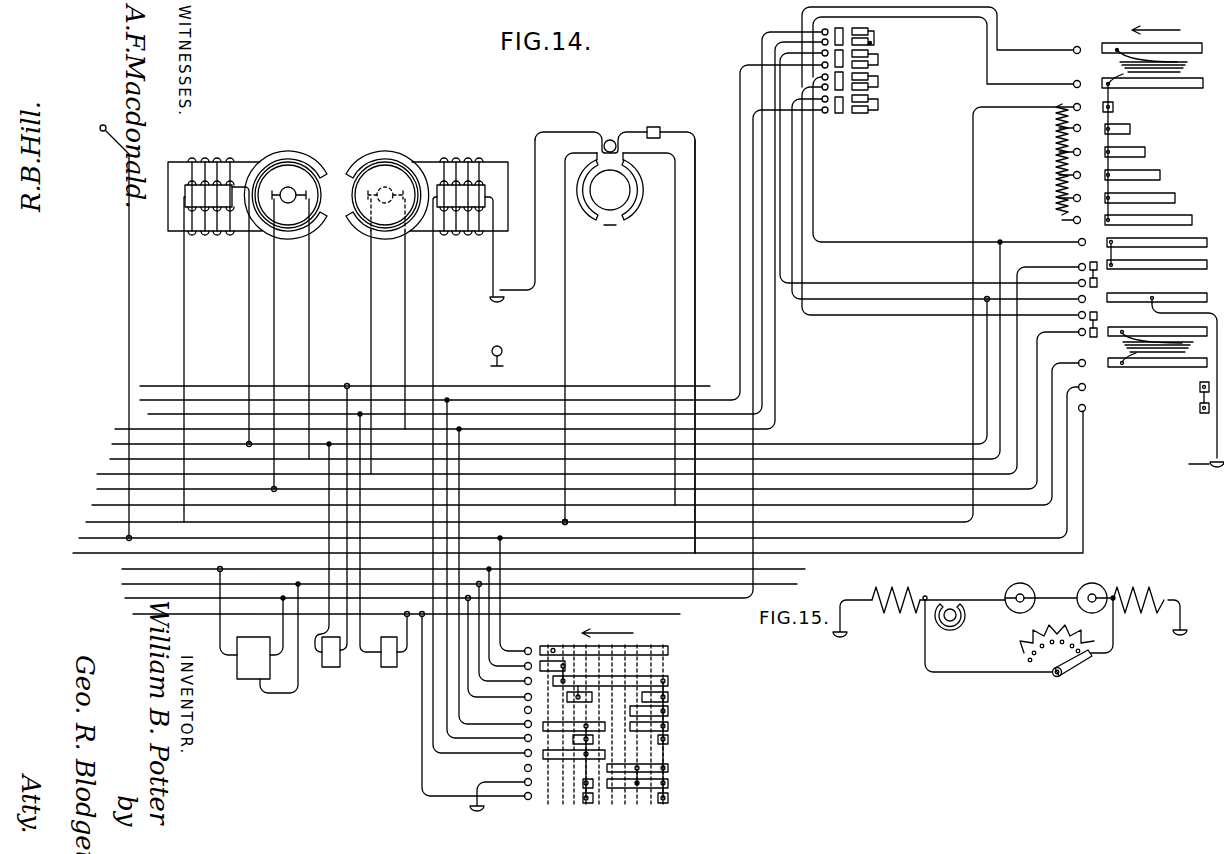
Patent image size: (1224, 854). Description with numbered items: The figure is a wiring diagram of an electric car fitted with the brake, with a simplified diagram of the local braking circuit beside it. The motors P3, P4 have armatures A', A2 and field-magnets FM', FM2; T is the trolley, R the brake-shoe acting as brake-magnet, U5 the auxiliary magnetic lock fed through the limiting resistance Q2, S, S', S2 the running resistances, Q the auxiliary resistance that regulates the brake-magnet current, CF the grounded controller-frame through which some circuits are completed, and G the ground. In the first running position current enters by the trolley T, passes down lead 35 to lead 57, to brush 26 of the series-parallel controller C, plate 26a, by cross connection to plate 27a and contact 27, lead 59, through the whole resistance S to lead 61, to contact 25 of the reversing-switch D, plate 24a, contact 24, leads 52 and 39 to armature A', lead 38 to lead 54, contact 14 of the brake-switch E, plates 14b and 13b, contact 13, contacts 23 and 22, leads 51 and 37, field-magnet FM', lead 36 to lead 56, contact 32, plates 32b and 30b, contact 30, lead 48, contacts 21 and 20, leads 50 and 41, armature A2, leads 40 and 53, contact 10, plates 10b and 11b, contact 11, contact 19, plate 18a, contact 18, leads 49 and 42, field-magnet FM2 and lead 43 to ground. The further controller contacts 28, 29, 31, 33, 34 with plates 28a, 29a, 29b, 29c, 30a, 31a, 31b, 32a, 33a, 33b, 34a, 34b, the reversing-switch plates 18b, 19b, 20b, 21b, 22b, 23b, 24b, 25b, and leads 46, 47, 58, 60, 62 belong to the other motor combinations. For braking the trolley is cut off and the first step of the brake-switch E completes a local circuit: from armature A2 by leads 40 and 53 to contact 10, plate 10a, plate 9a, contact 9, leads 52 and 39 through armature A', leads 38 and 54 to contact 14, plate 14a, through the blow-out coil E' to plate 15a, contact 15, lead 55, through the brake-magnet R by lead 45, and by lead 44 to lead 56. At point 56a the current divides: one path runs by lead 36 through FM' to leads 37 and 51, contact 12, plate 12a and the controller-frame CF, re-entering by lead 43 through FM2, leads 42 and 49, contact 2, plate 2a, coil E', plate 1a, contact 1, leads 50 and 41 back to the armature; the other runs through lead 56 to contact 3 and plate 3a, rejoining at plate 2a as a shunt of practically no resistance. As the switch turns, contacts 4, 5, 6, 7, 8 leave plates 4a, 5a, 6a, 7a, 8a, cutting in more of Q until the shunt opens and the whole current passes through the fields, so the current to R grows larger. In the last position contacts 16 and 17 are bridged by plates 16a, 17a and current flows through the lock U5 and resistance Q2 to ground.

In FIG. 14, the contact 1 is at (946, 47).
In FIG. 14, the contact 2 is at (952, 54).
In FIG. 14, the contact 3 is at (1083, 107).
In FIG. 14, the contact 4 is at (1075, 128).
In FIG. 14, the contact 5 is at (1075, 152).
In FIG. 14, the contact 6 is at (1075, 175).
In FIG. 14, the contact 7 is at (1075, 198).
In FIG. 14, the contact 8 is at (1077, 220).
In FIG. 14, the contact 9 is at (954, 162).
In FIG. 14, the contact 10 is at (1078, 264).
In FIG. 14, the contact 11 is at (1078, 282).
In FIG. 14, the contact 12 is at (1078, 298).
In FIG. 14, the contact 13 is at (1078, 314).
In FIG. 14, the contact 14 is at (1078, 331).
In FIG. 14, the contact 15 is at (1078, 362).
In FIG. 14, the contact 16 is at (1091, 382).
In FIG. 14, the contact 17 is at (1091, 404).
In FIG. 14, the contact 18 is at (817, 26).
In FIG. 14, the contact 19 is at (817, 36).
In FIG. 14, the contact 20 is at (817, 47).
In FIG. 14, the contact 21 is at (817, 59).
In FIG. 14, the contact 22 is at (817, 71).
In FIG. 14, the contact 23 is at (817, 82).
In FIG. 14, the contact 24 is at (817, 94).
In FIG. 14, the contact 25 is at (818, 115).
In FIG. 14, the contact-brush 26 is at (515, 595).
In FIG. 14, the contact 27 is at (509, 618).
In FIG. 14, the controller terminal 28 is at (504, 633).
In FIG. 14, the controller terminal 29 is at (499, 655).
In FIG. 14, the contact 30 is at (494, 577).
In FIG. 14, the controller terminal 31 is at (488, 570).
In FIG. 14, the contact 32 is at (520, 755).
In FIG. 14, the controller terminal 33 is at (501, 793).
In FIG. 14, the controller terminal 34 is at (476, 706).
In FIG. 14, the lead 35 is at (119, 336).
In FIG. 14, the lead 36 is at (192, 359).
In FIG. 14, the lead 37 is at (239, 317).
In FIG. 14, the lead 38 is at (281, 345).
In FIG. 14, the lead 39 is at (319, 329).
In FIG. 14, the lead 40 is at (378, 336).
In FIG. 14, the lead 41 is at (412, 314).
In FIG. 14, the lead 42 is at (479, 475).
In FIG. 14, the lead 43 is at (497, 263).
In FIG. 14, the lead 44 is at (580, 339).
In FIG. 14, the lead 45 is at (649, 329).
In FIG. 14, the conductor 46 is at (704, 346).
In FIG. 14, the conductor 47 is at (425, 379).
In FIG. 14, the lead 48 is at (481, 232).
In FIG. 14, the lead 49 is at (485, 223).
In FIG. 14, the lead 50 is at (468, 235).
In FIG. 14, the lead 51 is at (549, 371).
In FIG. 14, the lead 52 is at (556, 349).
In FIG. 14, the lead 53 is at (588, 370).
In FIG. 14, the lead 54 is at (588, 410).
In FIG. 14, the lead 55 is at (585, 434).
In FIG. 14, the lead 56 is at (580, 314).
In FIG. 14, the point 56a is at (552, 517).
In FIG. 15, the point 56a is at (962, 591).
In FIG. 14, the lead 57 is at (579, 462).
In FIG. 14, the conductor 58 is at (578, 482).
In FIG. 14, the lead 59 is at (463, 562).
In FIG. 14, the conductor 60 is at (459, 577).
In FIG. 14, the lead 61 is at (473, 354).
In FIG. 14, the conductor 62 is at (406, 607).
In FIG. 14, the contact-plate 1a is at (1178, 46).
In FIG. 14, the contact-plate 2a is at (1192, 88).
In FIG. 14, the contact-plate 3a is at (1118, 106).
In FIG. 15, the contact-plate 3a is at (1093, 666).
In FIG. 14, the contact-plate 4a is at (1127, 127).
In FIG. 14, the contact-plate 5a is at (1135, 149).
In FIG. 14, the contact-plate 6a is at (1142, 172).
In FIG. 14, the contact-plate 7a is at (1149, 195).
In FIG. 14, the contact-plate 8a is at (1157, 217).
In FIG. 15, the contact-plate 8a is at (1037, 661).
In FIG. 14, the contact-plate 9a is at (1164, 242).
In FIG. 14, the contact-plate 10a is at (1165, 257).
In FIG. 14, the contact-plate 10b is at (1092, 262).
In FIG. 14, the contact-plate 11b is at (1099, 286).
In FIG. 14, the contact-plate 12a is at (1165, 380).
In FIG. 14, the contact-plate 13b is at (1099, 316).
In FIG. 14, the contact-plate 14a is at (1166, 334).
In FIG. 14, the contact-plate 14b is at (1099, 333).
In FIG. 14, the contact-plate 15a is at (1166, 361).
In FIG. 14, the contact-plate 16a is at (1190, 392).
In FIG. 14, the contact-plate 17a is at (1190, 408).
In FIG. 14, the contact-plate 18a is at (839, 28).
In FIG. 14, the contact 18b is at (866, 28).
In FIG. 14, the contact 19b is at (872, 42).
In FIG. 14, the contact 20b is at (877, 55).
In FIG. 14, the contact 21b is at (877, 63).
In FIG. 14, the contact 22b is at (877, 78).
In FIG. 14, the contact 23b is at (878, 86).
In FIG. 14, the contact-plate 24a is at (840, 114).
In FIG. 14, the contact 24b is at (878, 101).
In FIG. 14, the contact 25b is at (878, 110).
In FIG. 14, the contact-plate 26a is at (619, 648).
In FIG. 14, the contact-plate 27a is at (564, 670).
In FIG. 14, the controller contact 28a is at (625, 735).
In FIG. 14, the controller contact 29a is at (670, 695).
In FIG. 14, the controller contact 29b is at (664, 709).
In FIG. 14, the controller contact 29c is at (590, 698).
In FIG. 14, the controller contact 30a is at (664, 725).
In FIG. 14, the contact-plate 30b is at (579, 754).
In FIG. 14, the controller contact 31a is at (678, 739).
In FIG. 14, the controller contact 31b is at (594, 739).
In FIG. 14, the controller contact 32a is at (652, 772).
In FIG. 14, the contact-plate 32b is at (585, 752).
In FIG. 14, the controller contact 33a is at (652, 782).
In FIG. 14, the controller contact 33b is at (579, 777).
In FIG. 14, the controller contact 34a is at (678, 796).
In FIG. 14, the controller contact 34b is at (599, 799).
In FIG. 14, the trolley T is at (90, 137).
In FIG. 14, the resistance S is at (259, 630).
In FIG. 14, the resistance S' is at (332, 537).
In FIG. 14, the resistance S2 is at (389, 668).
In FIG. 14, the field-magnet FM' is at (215, 187).
In FIG. 15, the field-magnet FM' is at (896, 588).
In FIG. 14, the field-magnet FM2 is at (459, 187).
In FIG. 15, the field-magnet FM2 is at (1138, 588).
In FIG. 14, the motor P3 is at (285, 179).
In FIG. 14, the motor P4 is at (387, 180).
In FIG. 14, the armature A' is at (289, 188).
In FIG. 15, the armature A' is at (1020, 588).
In FIG. 14, the armature A2 is at (385, 188).
In FIG. 15, the armature A2 is at (1075, 588).
In FIG. 14, the brake-shoe R is at (597, 342).
In FIG. 15, the brake-shoe R is at (950, 627).
In FIG. 14, the auxiliary magnetic lock U5 is at (603, 134).
In FIG. 14, the resistance Q2 is at (652, 119).
In FIG. 14, the auxiliary resistance Q is at (1046, 159).
In FIG. 15, the auxiliary resistance Q is at (1057, 629).
In FIG. 14, the reversing-switch D is at (881, 70).
In FIG. 14, the brake-switch E is at (1155, 19).
In FIG. 14, the blow-out magnet coil E' is at (1137, 209).
In FIG. 14, the controller C is at (608, 725).
In FIG. 14, the controller-frame CF is at (511, 305).
In FIG. 15, the controller-frame CF is at (1022, 621).
In FIG. 14, the ground G is at (505, 357).